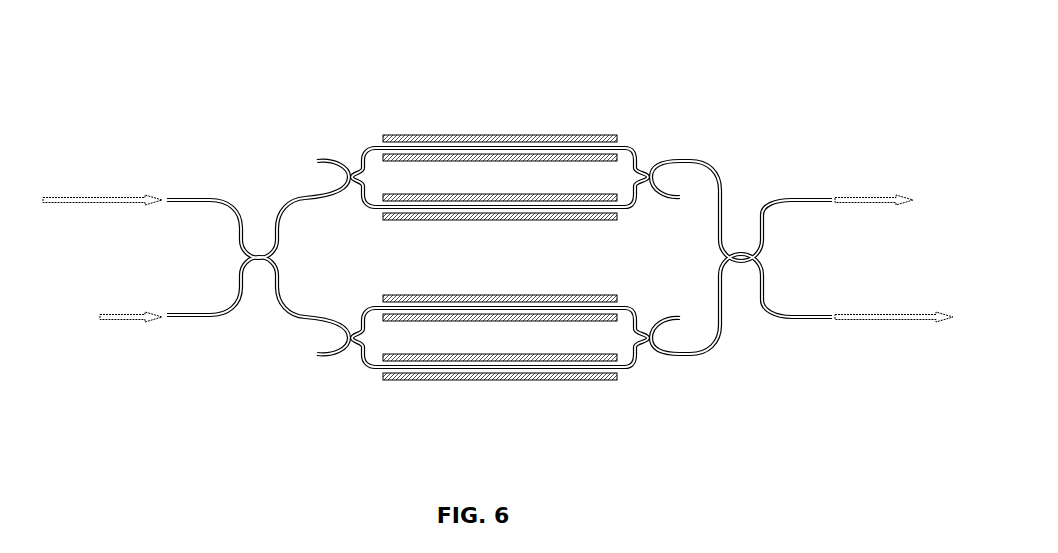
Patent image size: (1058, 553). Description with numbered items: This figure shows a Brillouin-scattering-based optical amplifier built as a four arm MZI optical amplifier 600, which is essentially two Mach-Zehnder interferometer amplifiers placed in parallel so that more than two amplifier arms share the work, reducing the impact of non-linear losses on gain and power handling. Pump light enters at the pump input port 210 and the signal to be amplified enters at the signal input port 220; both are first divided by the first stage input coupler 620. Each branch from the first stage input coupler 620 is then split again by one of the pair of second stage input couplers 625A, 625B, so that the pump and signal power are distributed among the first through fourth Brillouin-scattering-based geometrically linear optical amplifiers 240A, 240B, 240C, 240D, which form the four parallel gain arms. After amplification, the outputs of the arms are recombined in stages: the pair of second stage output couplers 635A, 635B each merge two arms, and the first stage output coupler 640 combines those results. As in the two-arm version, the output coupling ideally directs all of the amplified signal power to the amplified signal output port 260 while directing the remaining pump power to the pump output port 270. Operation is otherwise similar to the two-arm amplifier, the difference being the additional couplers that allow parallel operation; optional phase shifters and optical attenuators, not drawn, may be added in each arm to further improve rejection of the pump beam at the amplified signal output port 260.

The four arm MZI optical amplifier 600 is at (449, 31).
The pump input port 210 is at (153, 180).
The signal input port 220 is at (160, 330).
The first stage input coupler 620 is at (258, 242).
The second stage input coupler 625A is at (350, 170).
The second stage input coupler 625B is at (350, 354).
The Brillouin-scattering-based geometrically linear optical amplifier 240A is at (445, 133).
The Brillouin-scattering-based geometrically linear optical amplifier 240B is at (522, 192).
The Brillouin-scattering-based geometrically linear optical amplifier 240C is at (445, 391).
The Brillouin-scattering-based geometrically linear optical amplifier 240D is at (523, 336).
The second stage output coupler 635A is at (650, 168).
The second stage output coupler 635B is at (652, 354).
The first stage output coupler 640 is at (740, 244).
The amplified signal output port 260 is at (838, 189).
The pump output port 270 is at (838, 330).